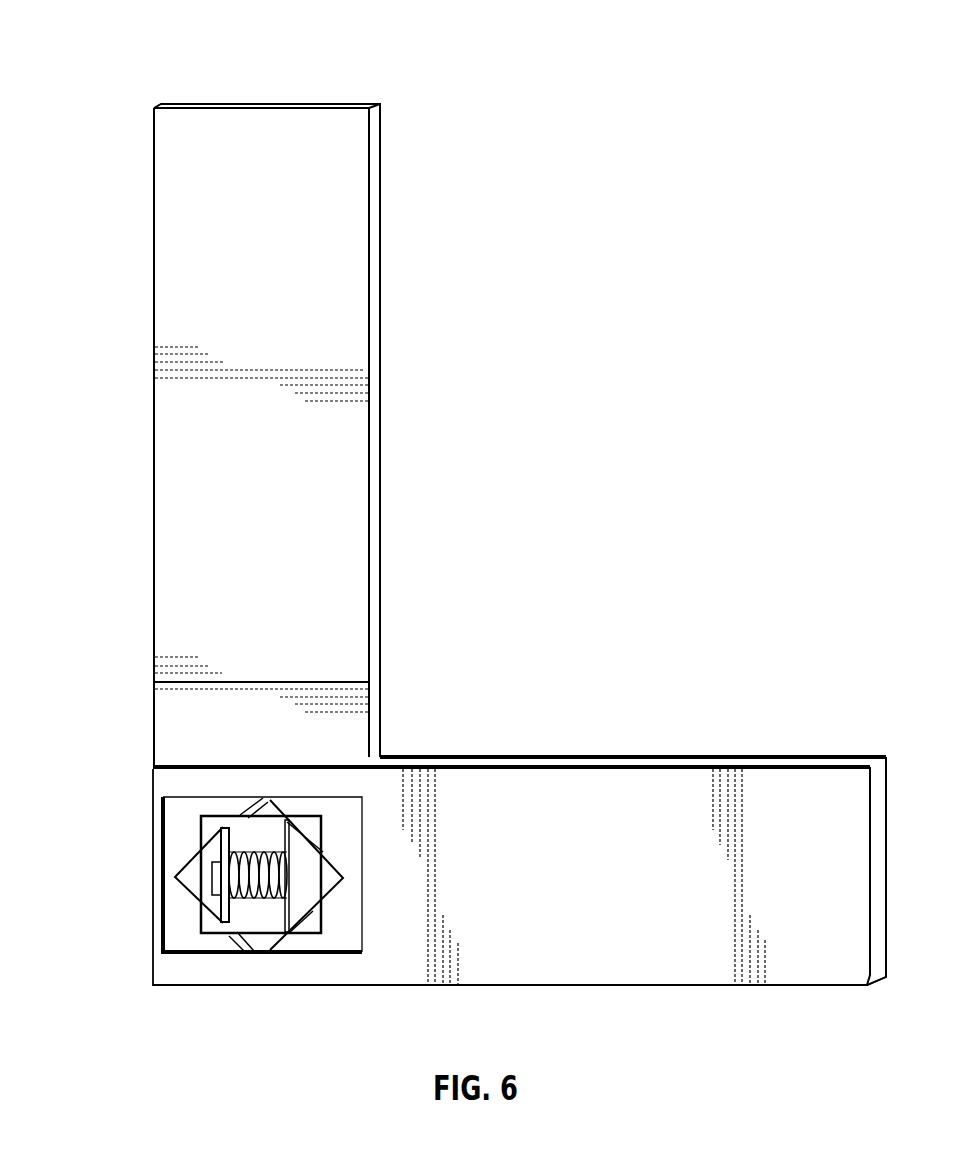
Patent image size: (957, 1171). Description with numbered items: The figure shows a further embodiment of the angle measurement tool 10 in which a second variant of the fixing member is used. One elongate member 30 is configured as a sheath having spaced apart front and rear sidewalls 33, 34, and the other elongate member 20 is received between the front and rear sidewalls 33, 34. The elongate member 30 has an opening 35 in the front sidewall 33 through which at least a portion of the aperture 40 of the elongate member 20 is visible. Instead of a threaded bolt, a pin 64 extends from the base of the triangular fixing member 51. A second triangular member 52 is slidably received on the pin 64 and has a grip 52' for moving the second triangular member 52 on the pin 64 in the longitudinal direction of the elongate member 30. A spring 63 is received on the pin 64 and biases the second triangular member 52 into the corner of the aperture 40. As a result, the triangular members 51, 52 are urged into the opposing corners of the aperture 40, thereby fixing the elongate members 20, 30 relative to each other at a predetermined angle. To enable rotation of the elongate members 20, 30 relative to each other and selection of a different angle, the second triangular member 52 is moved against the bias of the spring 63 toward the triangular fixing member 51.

The measurement tool 10 is at (182, 71).
The elongate member 20 is at (372, 397).
The elongate member 30 is at (543, 705).
The front sidewall 33 is at (602, 778).
The rear sidewall 34 is at (733, 757).
The opening 35 is at (362, 944).
The aperture 40 is at (232, 818).
The triangular fixing member 51 is at (305, 912).
The second triangular member 52 is at (130, 855).
The grip 52' is at (132, 895).
The spring 63 is at (258, 903).
The pin 64 is at (243, 895).